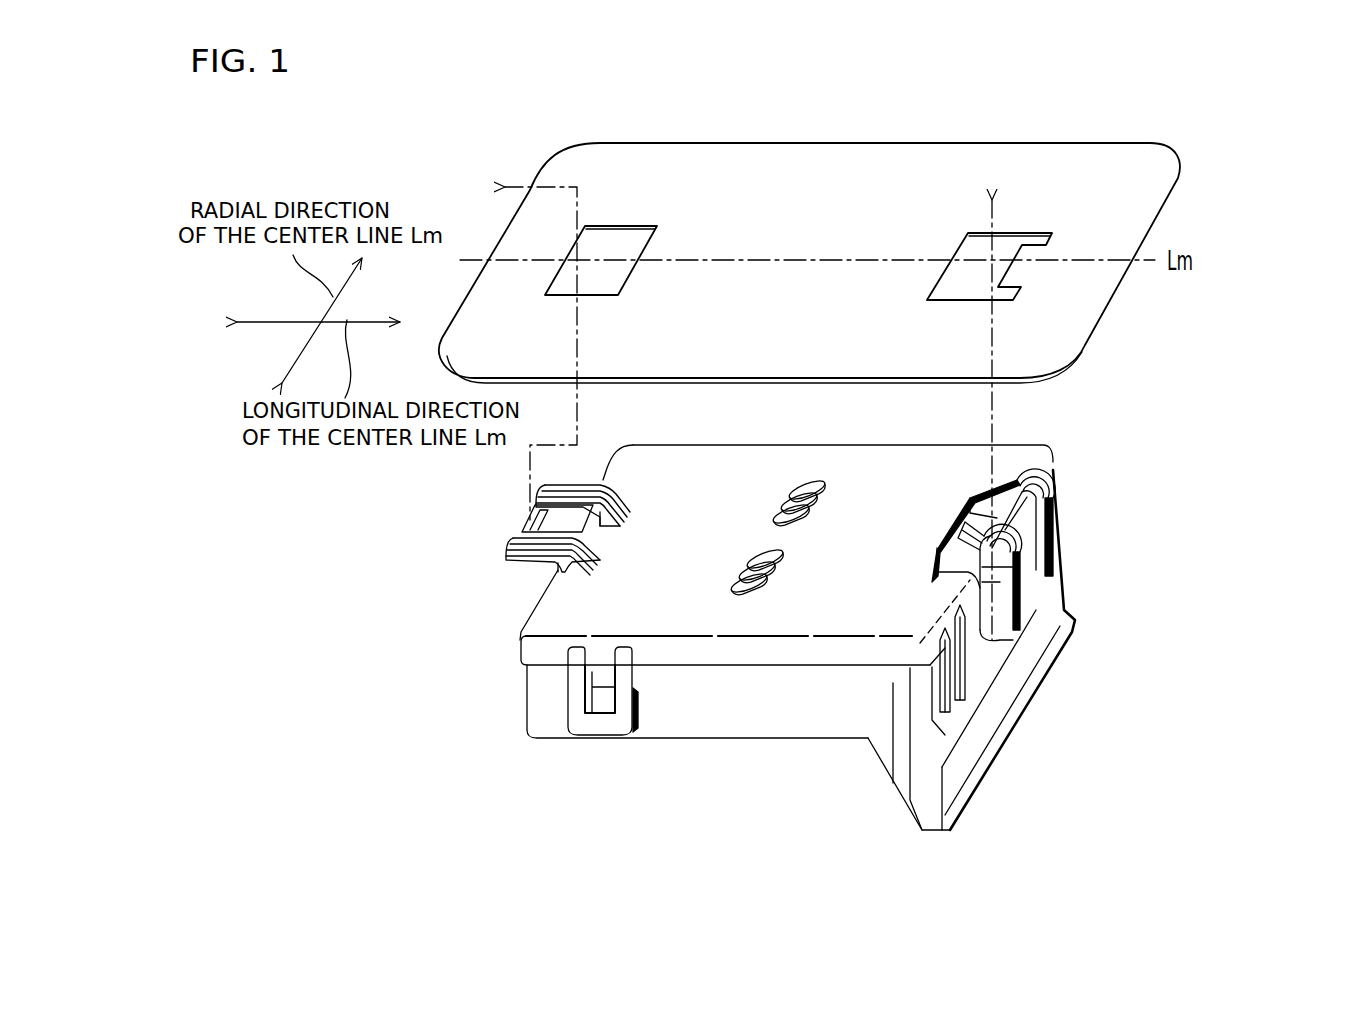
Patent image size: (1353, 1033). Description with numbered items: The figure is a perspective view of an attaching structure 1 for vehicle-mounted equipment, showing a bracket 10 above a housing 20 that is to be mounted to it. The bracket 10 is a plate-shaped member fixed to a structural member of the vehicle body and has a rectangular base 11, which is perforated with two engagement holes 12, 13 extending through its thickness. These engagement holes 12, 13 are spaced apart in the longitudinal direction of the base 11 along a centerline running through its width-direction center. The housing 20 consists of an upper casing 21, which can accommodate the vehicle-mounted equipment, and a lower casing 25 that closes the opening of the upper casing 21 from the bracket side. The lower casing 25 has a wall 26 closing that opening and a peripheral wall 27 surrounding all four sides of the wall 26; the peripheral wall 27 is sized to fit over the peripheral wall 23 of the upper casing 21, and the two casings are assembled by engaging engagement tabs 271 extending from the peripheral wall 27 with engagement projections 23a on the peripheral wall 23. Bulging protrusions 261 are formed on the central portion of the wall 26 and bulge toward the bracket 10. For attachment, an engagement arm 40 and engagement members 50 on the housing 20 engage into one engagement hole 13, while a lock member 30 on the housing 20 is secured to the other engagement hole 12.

The attaching structure 1 is at (1132, 403).
The bracket 10 is at (1172, 157).
The base 11 is at (770, 160).
The engagement hole 12 is at (608, 280).
The engagement hole 13 is at (955, 278).
The housing 20 is at (443, 633).
The upper casing 21 is at (525, 694).
The peripheral wall 23 is at (730, 718).
The engagement projection 23a is at (600, 705).
The lower casing 25 is at (520, 651).
The wall 26 is at (752, 450).
The bulging protrusion 261 is at (815, 503).
The peripheral wall 27 is at (803, 653).
The engagement tab 271 is at (608, 725).
The lock member 30 is at (520, 527).
The engagement arm 40 is at (1027, 593).
The engagement member 50 is at (1057, 500).